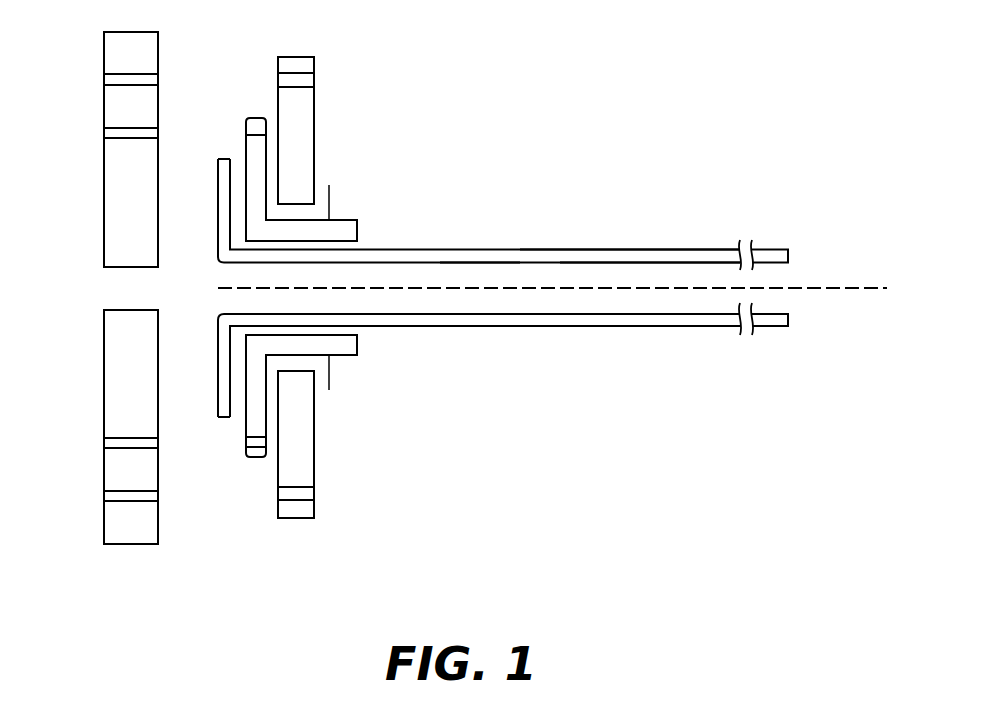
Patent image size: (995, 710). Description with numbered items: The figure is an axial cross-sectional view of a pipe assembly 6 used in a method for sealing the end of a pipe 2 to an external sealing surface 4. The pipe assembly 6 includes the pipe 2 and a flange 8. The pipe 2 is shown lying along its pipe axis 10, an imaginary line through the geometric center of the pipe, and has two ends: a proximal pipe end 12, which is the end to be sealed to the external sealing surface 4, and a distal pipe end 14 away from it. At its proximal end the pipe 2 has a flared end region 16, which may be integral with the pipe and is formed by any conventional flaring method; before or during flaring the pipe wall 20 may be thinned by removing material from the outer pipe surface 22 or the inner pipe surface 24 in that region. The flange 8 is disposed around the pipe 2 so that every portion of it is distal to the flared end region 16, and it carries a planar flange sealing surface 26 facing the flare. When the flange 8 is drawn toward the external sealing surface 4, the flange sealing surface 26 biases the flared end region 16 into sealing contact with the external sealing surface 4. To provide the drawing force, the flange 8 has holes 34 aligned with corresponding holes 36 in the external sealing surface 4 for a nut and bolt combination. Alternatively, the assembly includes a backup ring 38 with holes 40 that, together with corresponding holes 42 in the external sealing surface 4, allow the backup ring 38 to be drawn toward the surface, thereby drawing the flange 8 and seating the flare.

The pipe 2 is at (718, 232).
The external sealing surface 4 is at (159, 193).
The pipe assembly 6 is at (417, 473).
The flange 8 is at (347, 227).
The pipe axis 10 is at (870, 287).
The proximal pipe end 12 is at (229, 157).
The distal pipe end 14 is at (790, 255).
The flared end region 16 is at (216, 385).
The pipe wall 20 is at (617, 258).
The outer pipe surface 22 is at (553, 249).
The inner pipe surface 24 is at (474, 263).
The flange sealing surface 26 is at (247, 428).
The holes 34 is at (252, 135).
The holes 36 is at (110, 133).
The backup ring 38 is at (307, 123).
The holes 40 is at (307, 82).
The holes 42 is at (110, 80).